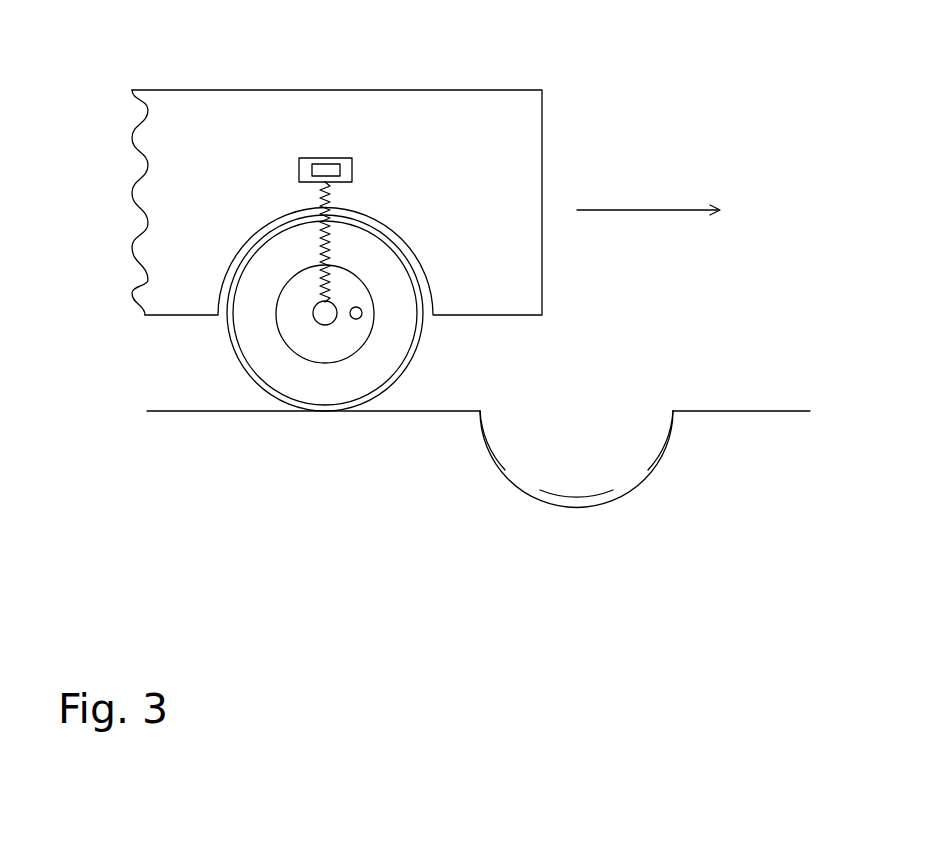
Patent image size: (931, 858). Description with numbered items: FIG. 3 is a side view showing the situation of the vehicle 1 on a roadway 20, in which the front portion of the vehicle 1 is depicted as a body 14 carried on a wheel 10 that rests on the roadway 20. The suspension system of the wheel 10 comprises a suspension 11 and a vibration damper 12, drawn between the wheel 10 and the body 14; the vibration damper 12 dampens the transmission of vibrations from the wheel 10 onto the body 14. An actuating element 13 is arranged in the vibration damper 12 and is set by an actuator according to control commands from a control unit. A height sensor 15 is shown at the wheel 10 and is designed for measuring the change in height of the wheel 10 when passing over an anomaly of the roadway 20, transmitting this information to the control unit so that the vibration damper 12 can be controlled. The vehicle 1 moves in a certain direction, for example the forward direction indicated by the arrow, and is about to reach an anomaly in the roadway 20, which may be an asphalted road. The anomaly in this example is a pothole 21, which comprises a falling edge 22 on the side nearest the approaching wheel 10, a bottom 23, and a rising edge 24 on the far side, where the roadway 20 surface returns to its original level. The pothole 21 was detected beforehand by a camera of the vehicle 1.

The vehicle 1 is at (426, 251).
The wheel 10 is at (258, 360).
The suspension 11 is at (317, 200).
The vibration damper 12 is at (300, 158).
The actuating element 13 is at (313, 158).
The body 14 is at (507, 103).
The height sensor 15 is at (358, 324).
The roadway 20 is at (752, 413).
The pothole 21 is at (600, 485).
The falling edge 22 is at (504, 456).
The bottom 23 is at (562, 490).
The rising edge 24 is at (652, 454).